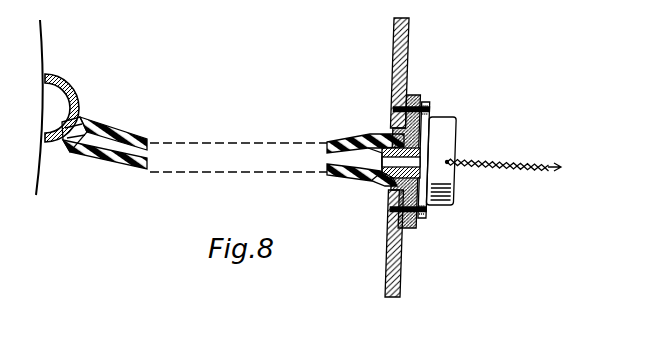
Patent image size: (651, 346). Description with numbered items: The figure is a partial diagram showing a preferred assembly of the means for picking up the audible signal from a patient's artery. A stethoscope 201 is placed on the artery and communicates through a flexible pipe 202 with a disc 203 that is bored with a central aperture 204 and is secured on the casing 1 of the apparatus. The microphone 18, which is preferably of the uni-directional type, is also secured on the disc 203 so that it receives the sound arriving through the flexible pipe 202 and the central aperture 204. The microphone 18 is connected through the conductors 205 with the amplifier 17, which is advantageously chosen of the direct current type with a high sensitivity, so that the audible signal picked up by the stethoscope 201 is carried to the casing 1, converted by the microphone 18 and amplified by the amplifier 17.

The casing 1 is at (408, 50).
The amplifier 17 is at (566, 172).
The microphone 18 is at (453, 188).
The stethoscope 201 is at (70, 88).
The flexible pipe 202 is at (122, 166).
The disc 203 is at (400, 119).
The central aperture 204 is at (398, 162).
The conductors 205 is at (505, 160).